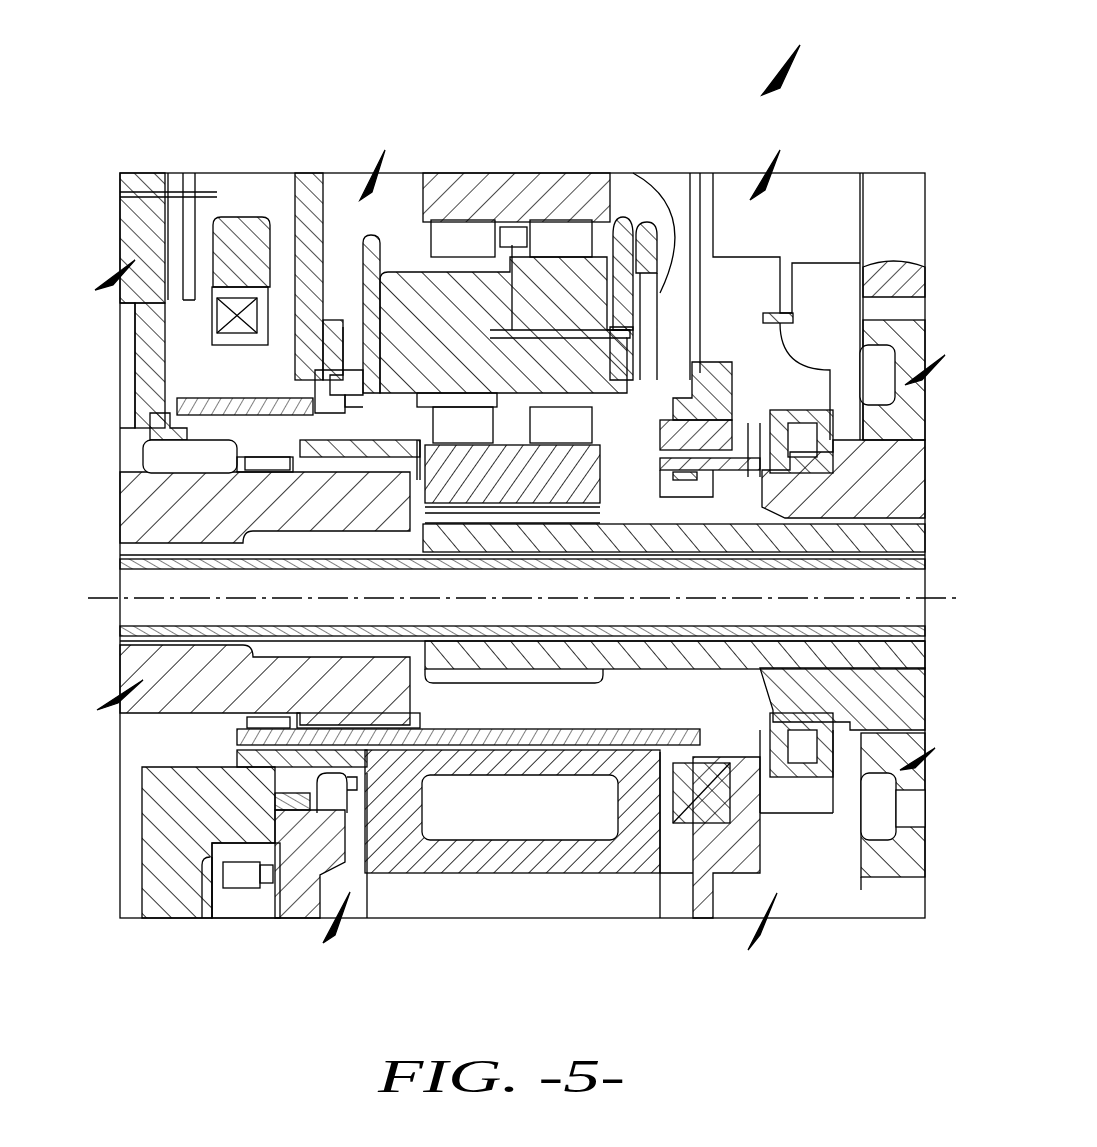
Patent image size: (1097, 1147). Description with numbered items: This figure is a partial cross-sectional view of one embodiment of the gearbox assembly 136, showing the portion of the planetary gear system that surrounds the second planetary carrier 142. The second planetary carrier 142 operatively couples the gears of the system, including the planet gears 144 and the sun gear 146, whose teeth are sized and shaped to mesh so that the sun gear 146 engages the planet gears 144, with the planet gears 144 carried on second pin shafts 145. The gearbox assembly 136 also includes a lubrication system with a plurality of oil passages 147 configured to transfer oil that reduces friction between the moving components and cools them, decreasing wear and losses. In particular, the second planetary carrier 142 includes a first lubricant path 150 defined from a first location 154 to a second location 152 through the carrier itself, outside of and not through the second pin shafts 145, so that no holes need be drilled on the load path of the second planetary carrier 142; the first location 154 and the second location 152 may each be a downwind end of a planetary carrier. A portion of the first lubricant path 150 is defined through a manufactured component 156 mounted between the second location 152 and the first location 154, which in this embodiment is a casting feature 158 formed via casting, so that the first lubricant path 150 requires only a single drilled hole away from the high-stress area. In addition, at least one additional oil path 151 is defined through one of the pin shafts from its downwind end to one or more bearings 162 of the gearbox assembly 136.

The gearbox assembly 136 is at (790, 60).
The second planetary carrier 142 is at (387, 247).
The planet gears 144 is at (433, 307).
The second pin shafts 145 is at (472, 207).
The sun gear 146 is at (170, 687).
The oil passages 147 is at (668, 172).
The first lubricant path 150 is at (377, 752).
The additional oil path 151 is at (563, 323).
The second location 152 is at (257, 765).
The first location 154 is at (790, 805).
The manufactured component 156 is at (687, 780).
The casting feature 158 is at (635, 805).
The bearings 162 is at (478, 228).